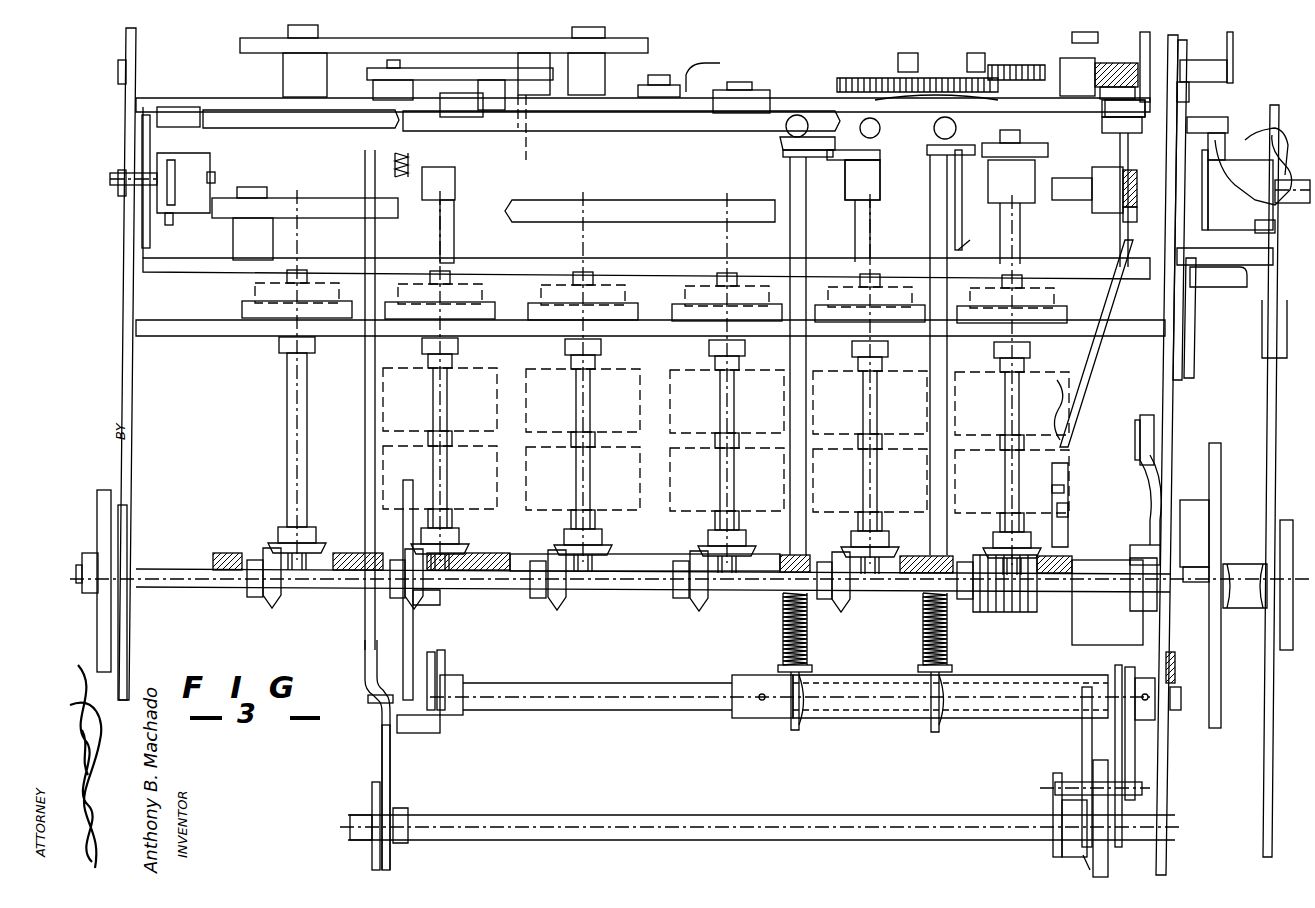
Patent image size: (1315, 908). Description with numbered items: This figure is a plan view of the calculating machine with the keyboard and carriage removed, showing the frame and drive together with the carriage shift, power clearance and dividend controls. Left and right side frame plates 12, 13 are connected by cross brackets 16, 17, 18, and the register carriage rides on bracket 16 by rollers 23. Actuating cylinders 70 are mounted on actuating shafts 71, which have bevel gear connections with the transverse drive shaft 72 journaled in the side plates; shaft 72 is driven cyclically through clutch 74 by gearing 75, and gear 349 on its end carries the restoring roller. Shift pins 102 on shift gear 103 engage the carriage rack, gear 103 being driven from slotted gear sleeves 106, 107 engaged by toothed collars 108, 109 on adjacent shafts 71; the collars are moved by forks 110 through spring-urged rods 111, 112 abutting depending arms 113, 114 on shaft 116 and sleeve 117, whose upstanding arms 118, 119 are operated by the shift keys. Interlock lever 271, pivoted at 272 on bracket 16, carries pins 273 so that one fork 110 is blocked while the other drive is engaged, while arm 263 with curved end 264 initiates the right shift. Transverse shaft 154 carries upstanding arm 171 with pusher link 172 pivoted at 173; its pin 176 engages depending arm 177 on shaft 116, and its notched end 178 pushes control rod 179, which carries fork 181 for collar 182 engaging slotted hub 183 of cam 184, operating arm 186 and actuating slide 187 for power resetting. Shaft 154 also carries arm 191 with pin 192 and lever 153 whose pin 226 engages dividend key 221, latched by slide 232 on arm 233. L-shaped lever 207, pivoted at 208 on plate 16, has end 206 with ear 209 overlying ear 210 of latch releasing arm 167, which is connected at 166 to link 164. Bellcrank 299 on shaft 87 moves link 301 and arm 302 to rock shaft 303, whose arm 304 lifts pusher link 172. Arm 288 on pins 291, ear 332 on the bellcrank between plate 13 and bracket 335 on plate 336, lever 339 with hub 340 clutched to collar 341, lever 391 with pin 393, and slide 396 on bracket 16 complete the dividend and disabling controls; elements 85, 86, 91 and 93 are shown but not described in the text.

The left side frame plate 12 is at (126, 350).
The right side frame plate 13 is at (1166, 768).
The cross bracket 16 is at (212, 100).
The cross bracket 17 is at (203, 336).
The cross bracket 18 is at (172, 555).
The roller 23 is at (178, 113).
The actuating cylinder 70 is at (380, 455).
The actuating shaft 71 is at (454, 245).
The transverse drive shaft 72 is at (627, 592).
The clutch 74 is at (1200, 527).
The gearing 75 is at (1221, 487).
The pin 85 is at (172, 220).
The bracket 86 is at (200, 160).
The shaft 87 is at (213, 172).
The washer 91 is at (148, 150).
The shaft 93 is at (140, 188).
The shift pin 102 is at (935, 45).
The shift gear 103 is at (978, 45).
The gear sleeve 106 is at (893, 78).
The gear sleeve 107 is at (1015, 65).
The toothed collar 108 is at (845, 180).
The toothed collar 109 is at (998, 132).
The fork 110 is at (783, 153).
The rod 111 is at (790, 183).
The rod 112 is at (930, 200).
The depending arm 113 is at (802, 725).
The depending arm 114 is at (931, 725).
The shaft 116 is at (563, 710).
The sleeve 117 is at (998, 690).
The upstanding arm 118 is at (1122, 745).
The upstanding arm 119 is at (1125, 668).
The bellcrank 153 is at (1082, 732).
The transverse shaft 154 is at (563, 810).
The link 164 is at (1233, 40).
The pivot 166 is at (1227, 62).
The latch releasing arm 167 is at (1197, 93).
The upstanding arm 171 is at (372, 793).
The pusher link 172 is at (382, 760).
The pivot 173 is at (405, 810).
The pin 176 is at (415, 733).
The depending arm 177 is at (440, 660).
The offset notched end 178 is at (360, 660).
The control rod 179 is at (362, 168).
The control fork 181 is at (364, 148).
The collar 182 is at (482, 128).
The slotted hub 183 is at (420, 65).
The cam 184 is at (367, 73).
The arm 186 is at (526, 128).
The actuating slide 187 is at (561, 130).
The depending arm 191 is at (1053, 800).
The pin 192 is at (1070, 782).
The end of lever 206 is at (1105, 120).
The L-shaped lever 207 is at (717, 63).
The pivot 208 is at (700, 68).
The ear 209 is at (1145, 38).
The ear 210 is at (1150, 42).
The dividend key 221 is at (1175, 660).
The pin 226 is at (1181, 692).
The latch slide 232 is at (1182, 328).
The arm 233 is at (1190, 113).
The shift engaging arm 263 is at (978, 236).
The curved upper end 264 is at (962, 210).
The lever 271 is at (870, 140).
The pivot 272 is at (934, 128).
The upstanding pin 273 is at (786, 133).
The depending arm 288 is at (1140, 448).
The pin 291 is at (1150, 480).
The bellcrank 299 is at (1123, 200).
The link 301 is at (1085, 368).
The depending arm 302 is at (1064, 490).
The transverse shaft 303 is at (1068, 512).
The arm 304 is at (420, 612).
The offset ear 332 is at (1200, 305).
The bracket 335 is at (1262, 358).
The plate 336 is at (1265, 772).
The lever 339 is at (1273, 228).
The hub 340 is at (1273, 212).
The collar 341 is at (1208, 225).
The gear 349 is at (1280, 552).
The lever 391 is at (1278, 145).
The pin 393 is at (1270, 128).
The slide 396 is at (1088, 118).